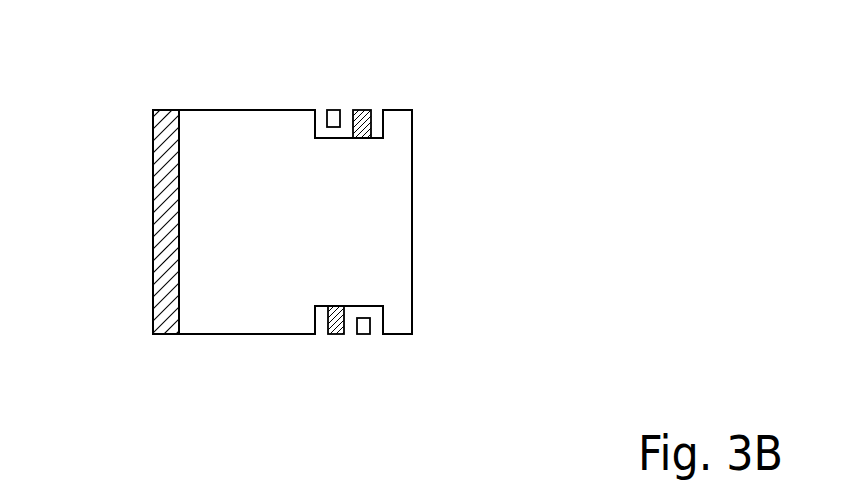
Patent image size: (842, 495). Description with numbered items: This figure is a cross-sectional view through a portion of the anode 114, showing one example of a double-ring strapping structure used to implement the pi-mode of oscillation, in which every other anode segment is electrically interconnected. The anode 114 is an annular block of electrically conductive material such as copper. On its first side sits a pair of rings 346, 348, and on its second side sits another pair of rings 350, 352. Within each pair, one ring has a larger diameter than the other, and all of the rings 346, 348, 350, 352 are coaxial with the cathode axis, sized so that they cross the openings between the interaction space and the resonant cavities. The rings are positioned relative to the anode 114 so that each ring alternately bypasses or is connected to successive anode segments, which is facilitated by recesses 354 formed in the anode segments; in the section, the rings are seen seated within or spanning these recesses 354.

The anode 114 is at (153, 187).
The ring 346 is at (364, 110).
The ring 348 is at (333, 110).
The ring 350 is at (365, 334).
The ring 352 is at (337, 334).
The recesses 354 is at (343, 138).